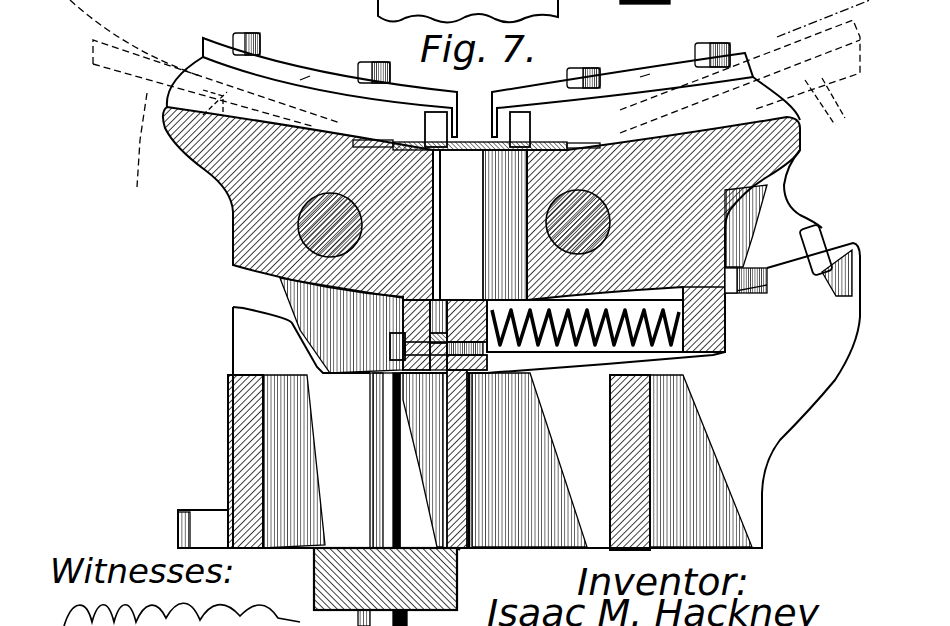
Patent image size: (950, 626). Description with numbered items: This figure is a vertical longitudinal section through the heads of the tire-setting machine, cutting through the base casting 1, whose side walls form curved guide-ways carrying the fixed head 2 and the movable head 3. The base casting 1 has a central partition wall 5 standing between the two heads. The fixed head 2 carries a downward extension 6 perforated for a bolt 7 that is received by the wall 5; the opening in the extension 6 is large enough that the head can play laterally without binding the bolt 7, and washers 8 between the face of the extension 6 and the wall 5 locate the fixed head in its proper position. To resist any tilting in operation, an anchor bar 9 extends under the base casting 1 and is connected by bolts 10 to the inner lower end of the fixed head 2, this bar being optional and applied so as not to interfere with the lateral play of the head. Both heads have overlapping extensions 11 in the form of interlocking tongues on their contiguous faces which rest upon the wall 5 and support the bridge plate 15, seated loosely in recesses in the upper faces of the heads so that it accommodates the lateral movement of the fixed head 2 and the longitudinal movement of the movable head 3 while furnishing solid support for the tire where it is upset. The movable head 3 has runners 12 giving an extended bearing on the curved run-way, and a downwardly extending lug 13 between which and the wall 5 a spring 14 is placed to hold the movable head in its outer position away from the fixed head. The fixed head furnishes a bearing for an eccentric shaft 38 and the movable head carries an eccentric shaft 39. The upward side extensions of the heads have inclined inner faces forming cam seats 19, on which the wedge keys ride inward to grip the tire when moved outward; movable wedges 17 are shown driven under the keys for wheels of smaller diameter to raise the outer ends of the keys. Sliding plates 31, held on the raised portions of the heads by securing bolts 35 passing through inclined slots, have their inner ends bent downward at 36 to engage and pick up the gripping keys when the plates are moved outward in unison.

The base casting 1 is at (240, 425).
The fixed head 2 is at (265, 170).
The movable head 3 is at (745, 160).
The central partition wall 5 is at (475, 383).
The downward extension 6 is at (403, 317).
The bolt 7 is at (390, 348).
The washers 8 is at (478, 246).
The anchor bar 9 is at (457, 576).
The bolts 10 is at (380, 442).
The overlapping extensions 11 is at (483, 225).
The runners 12 is at (779, 258).
The downwardly extending lug 13 is at (725, 334).
The spring 14 is at (597, 352).
The bridge plate 15 is at (470, 152).
The movable wedges 17 is at (178, 145).
The cam seats 19 is at (203, 62).
The sliding plates 31 is at (303, 80).
The securing bolts 35 is at (383, 62).
The downwardly bent inner end 36 is at (476, 128).
The eccentric shaft 38 is at (310, 224).
The eccentric shaft 39 is at (583, 222).